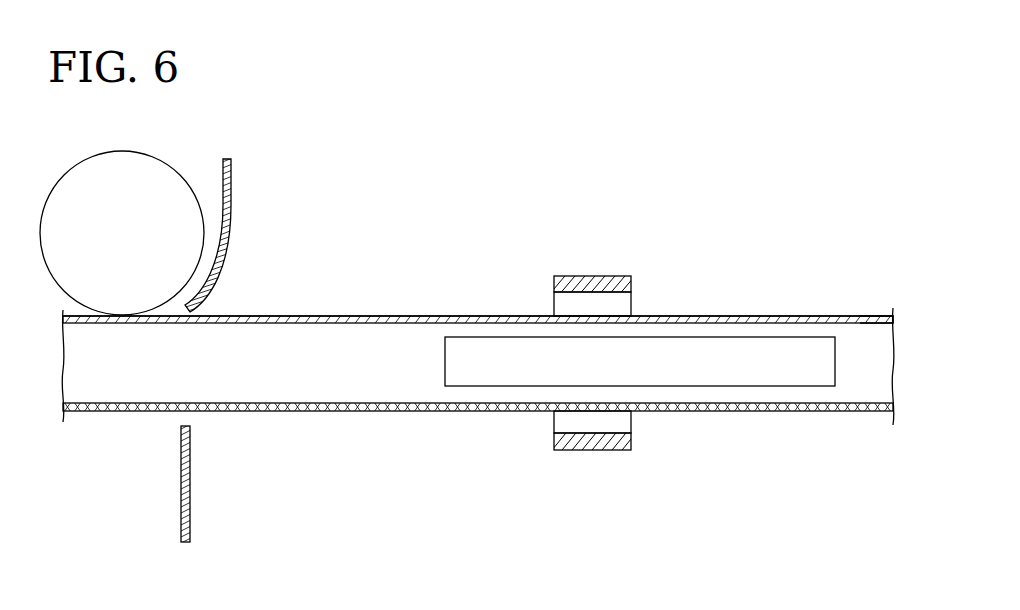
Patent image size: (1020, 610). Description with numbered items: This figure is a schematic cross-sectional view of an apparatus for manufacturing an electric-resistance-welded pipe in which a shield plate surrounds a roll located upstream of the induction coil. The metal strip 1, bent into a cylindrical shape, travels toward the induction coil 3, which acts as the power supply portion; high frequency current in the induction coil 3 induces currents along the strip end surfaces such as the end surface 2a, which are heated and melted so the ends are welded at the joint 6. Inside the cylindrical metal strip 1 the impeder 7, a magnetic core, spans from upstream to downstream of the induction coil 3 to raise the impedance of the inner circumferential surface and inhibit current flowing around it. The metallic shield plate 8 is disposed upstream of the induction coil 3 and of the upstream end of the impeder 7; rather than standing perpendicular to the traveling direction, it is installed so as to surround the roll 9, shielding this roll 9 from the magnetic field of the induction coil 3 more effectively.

The metal strip 1 is at (415, 316).
The end surface of the metal strip 2a is at (365, 316).
The induction coil 3 is at (632, 283).
The joint 6 is at (868, 313).
The impeder 7 is at (661, 375).
The shield plate 8 is at (232, 210).
The roll 9 is at (142, 187).